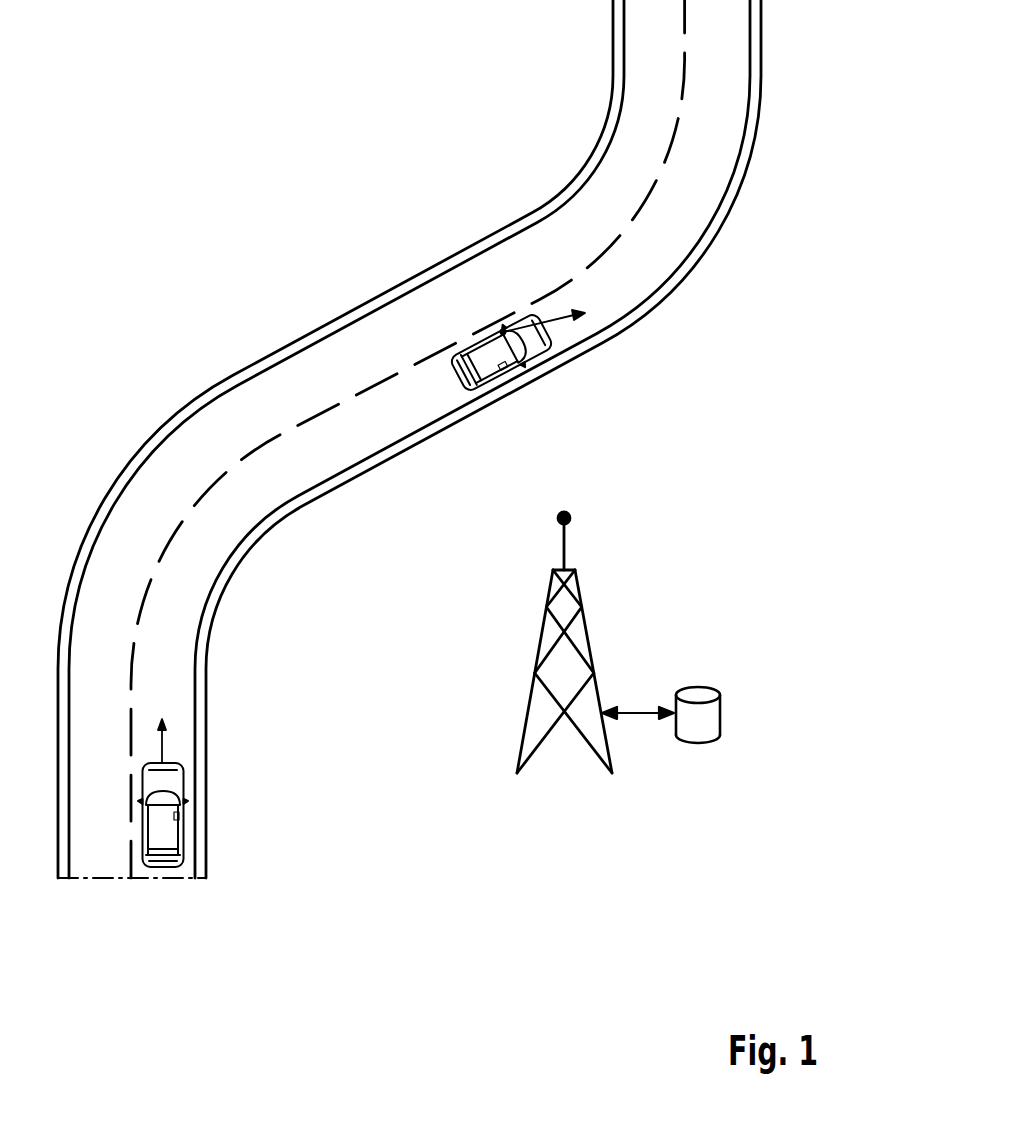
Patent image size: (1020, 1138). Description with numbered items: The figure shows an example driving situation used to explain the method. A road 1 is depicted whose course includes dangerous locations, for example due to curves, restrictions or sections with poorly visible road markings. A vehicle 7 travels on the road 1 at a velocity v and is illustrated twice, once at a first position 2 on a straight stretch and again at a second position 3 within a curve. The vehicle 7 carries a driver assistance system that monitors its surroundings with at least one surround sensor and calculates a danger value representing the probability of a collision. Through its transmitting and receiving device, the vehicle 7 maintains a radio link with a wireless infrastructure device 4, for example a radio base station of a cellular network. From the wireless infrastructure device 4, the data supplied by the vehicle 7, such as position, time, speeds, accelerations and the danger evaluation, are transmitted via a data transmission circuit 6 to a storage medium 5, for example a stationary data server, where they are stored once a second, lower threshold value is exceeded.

The road 1 is at (352, 310).
The first position 2 is at (160, 764).
The second position 3 is at (548, 327).
The wireless infrastructure device 4 is at (566, 544).
The storage medium 5 is at (699, 694).
The data transmission circuit 6 is at (637, 710).
The vehicle 7 is at (176, 819).